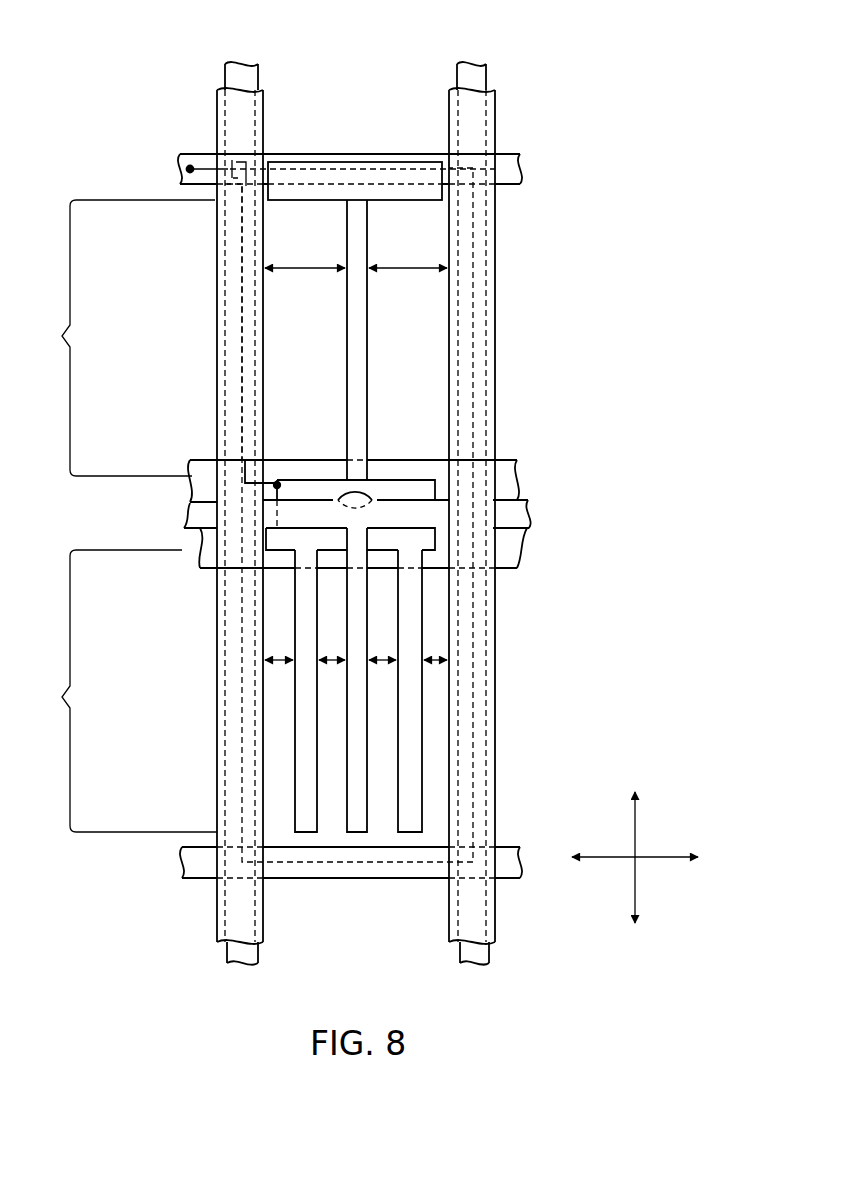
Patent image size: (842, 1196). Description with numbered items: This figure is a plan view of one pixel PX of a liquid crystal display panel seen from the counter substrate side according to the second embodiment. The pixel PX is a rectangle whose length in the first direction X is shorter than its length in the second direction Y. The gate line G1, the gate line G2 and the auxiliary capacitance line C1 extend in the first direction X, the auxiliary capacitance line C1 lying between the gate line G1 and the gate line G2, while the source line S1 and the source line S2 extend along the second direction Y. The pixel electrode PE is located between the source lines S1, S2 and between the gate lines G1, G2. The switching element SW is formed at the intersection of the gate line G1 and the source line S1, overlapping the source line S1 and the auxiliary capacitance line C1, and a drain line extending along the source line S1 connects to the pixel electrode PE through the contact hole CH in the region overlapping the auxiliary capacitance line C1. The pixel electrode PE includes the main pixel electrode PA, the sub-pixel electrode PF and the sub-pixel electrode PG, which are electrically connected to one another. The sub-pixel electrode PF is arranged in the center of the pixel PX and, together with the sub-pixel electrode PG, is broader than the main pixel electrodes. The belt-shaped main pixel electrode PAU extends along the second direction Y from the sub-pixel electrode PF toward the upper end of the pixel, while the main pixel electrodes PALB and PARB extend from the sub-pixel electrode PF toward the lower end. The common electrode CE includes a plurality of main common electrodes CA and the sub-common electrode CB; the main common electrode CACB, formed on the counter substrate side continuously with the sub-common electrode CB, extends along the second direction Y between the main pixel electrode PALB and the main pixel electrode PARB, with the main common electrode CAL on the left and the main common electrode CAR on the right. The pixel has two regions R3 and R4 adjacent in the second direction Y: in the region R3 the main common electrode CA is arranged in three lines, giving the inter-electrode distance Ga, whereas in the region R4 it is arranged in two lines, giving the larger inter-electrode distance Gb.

The source line S1 is at (243, 70).
The source line S2 is at (476, 68).
The gate line G1 is at (180, 169).
The gate line G2 is at (182, 860).
The switching element SW is at (232, 193).
The sub-pixel electrode PG is at (303, 162).
The pixel PX is at (371, 155).
The pixel electrode PE is at (358, 516).
The main pixel electrode PA is at (358, 516).
The main pixel electrode (upper side) PAU is at (370, 352).
The main pixel electrode (lower left side) PALB is at (295, 708).
The main pixel electrode (lower right side) PARB is at (422, 735).
The inter-electrode distance Gb is at (304, 272).
The inter-electrode distance Ga is at (332, 660).
The region R4 is at (121, 338).
The region R3 is at (122, 691).
The auxiliary capacitance line C1 is at (190, 462).
The sub-common electrode CB is at (279, 481).
The sub-pixel electrode PF is at (286, 480).
The contact hole CH is at (376, 495).
The main common electrode CA is at (351, 516).
The main common electrode (lower middle) CACB is at (347, 598).
The main common electrode (left) CAL is at (217, 776).
The main common electrode (right) CAR is at (497, 633).
The common electrode CE is at (446, 910).
The first direction X is at (645, 857).
The second direction Y is at (632, 841).